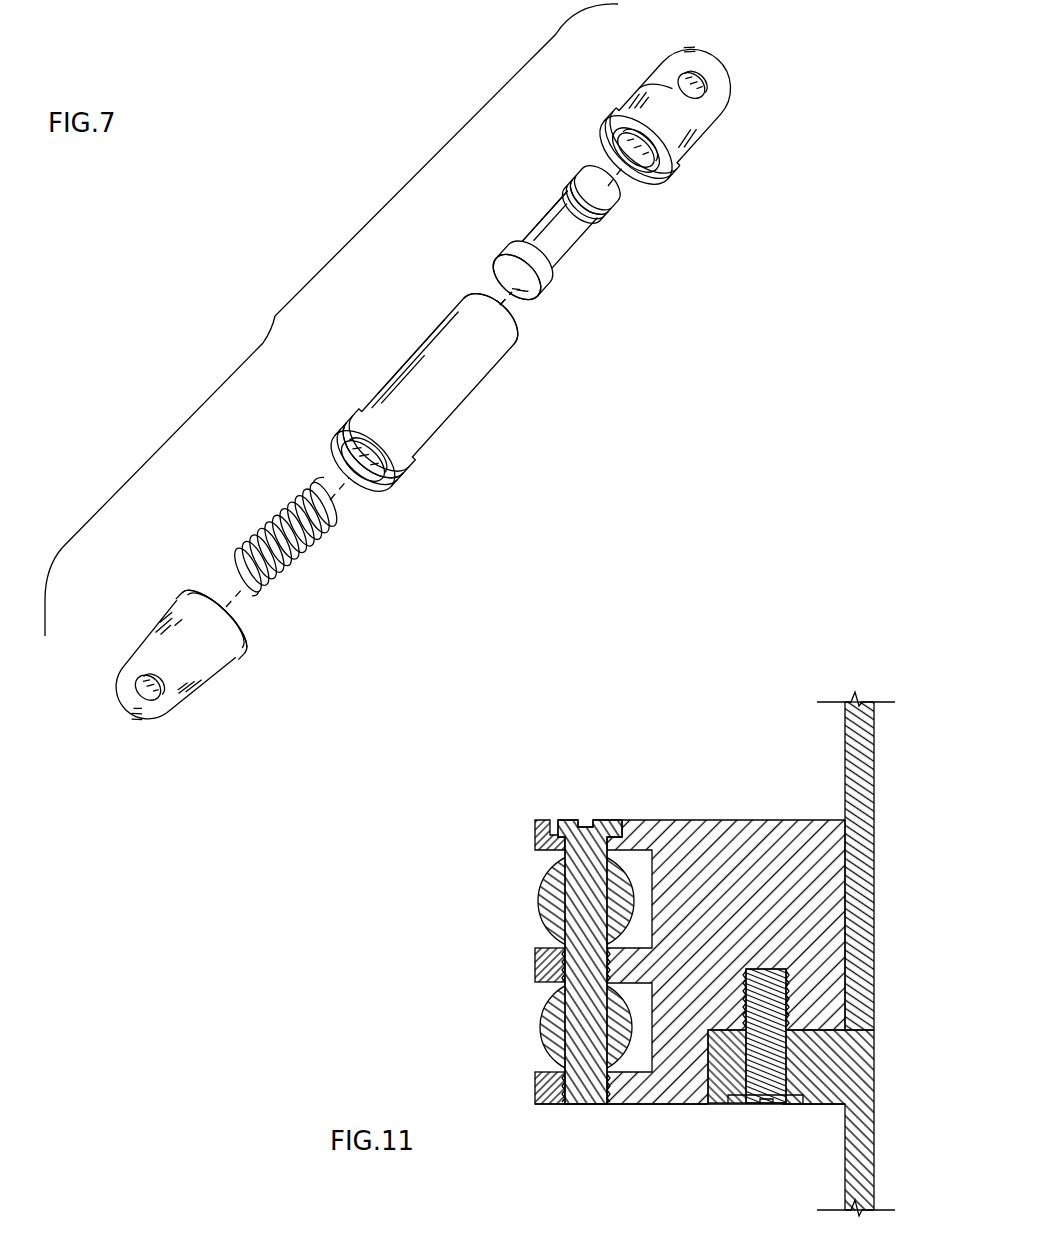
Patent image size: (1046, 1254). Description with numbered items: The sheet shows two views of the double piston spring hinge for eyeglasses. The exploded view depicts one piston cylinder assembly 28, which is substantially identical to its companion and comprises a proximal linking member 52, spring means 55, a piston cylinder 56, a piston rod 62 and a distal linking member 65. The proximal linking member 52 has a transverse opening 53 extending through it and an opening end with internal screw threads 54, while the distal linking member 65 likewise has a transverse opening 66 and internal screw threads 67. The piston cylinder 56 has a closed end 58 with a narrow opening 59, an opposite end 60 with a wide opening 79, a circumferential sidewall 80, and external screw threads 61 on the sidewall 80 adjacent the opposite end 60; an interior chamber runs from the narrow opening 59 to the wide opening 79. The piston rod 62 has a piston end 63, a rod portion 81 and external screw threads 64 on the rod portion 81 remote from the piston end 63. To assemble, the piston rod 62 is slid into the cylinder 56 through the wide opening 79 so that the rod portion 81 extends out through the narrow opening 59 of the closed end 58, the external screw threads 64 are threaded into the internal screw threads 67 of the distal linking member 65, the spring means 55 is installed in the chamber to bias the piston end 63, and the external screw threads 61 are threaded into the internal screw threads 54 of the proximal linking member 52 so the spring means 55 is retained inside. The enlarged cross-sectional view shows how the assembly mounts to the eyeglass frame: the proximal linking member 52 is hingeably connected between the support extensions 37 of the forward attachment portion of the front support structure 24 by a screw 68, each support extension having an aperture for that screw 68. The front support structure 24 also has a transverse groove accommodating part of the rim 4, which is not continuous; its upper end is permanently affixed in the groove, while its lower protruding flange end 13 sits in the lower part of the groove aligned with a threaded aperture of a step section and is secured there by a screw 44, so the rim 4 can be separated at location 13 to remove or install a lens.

In FIG. 7, the piston cylinder assembly 28 is at (260, 312).
In FIG. 7, the proximal linking member 52 is at (159, 736).
In FIG. 11, the proximal linking member 52 is at (546, 877).
In FIG. 7, the transverse opening 53 is at (168, 683).
In FIG. 7, the internal screw threads 54 is at (238, 608).
In FIG. 7, the spring means 55 is at (305, 568).
In FIG. 7, the piston cylinder 56 is at (400, 372).
In FIG. 7, the closed end 58 is at (510, 336).
In FIG. 7, the narrow opening 59 is at (486, 290).
In FIG. 7, the opposite end 60 is at (340, 447).
In FIG. 7, the external screw threads 61 is at (412, 456).
In FIG. 7, the piston rod 62 is at (521, 223).
In FIG. 7, the piston end 63 is at (538, 296).
In FIG. 7, the external screw threads 64 is at (578, 185).
In FIG. 7, the distal linking member 65 is at (724, 124).
In FIG. 7, the transverse opening 66 is at (668, 80).
In FIG. 7, the internal screw threads 67 is at (641, 167).
In FIG. 7, the wide opening 79 is at (372, 484).
In FIG. 7, the circumferential sidewall 80 is at (437, 403).
In FIG. 7, the rod portion 81 is at (560, 252).
In FIG. 11, the support extensions 37 is at (535, 827).
In FIG. 11, the screw 68 is at (600, 820).
In FIG. 11, the front support structure 24 is at (695, 830).
In FIG. 11, the rim 4 is at (847, 731).
In FIG. 11, the screw 44 is at (745, 1102).
In FIG. 11, the lower protruding flange end 13 is at (826, 1093).